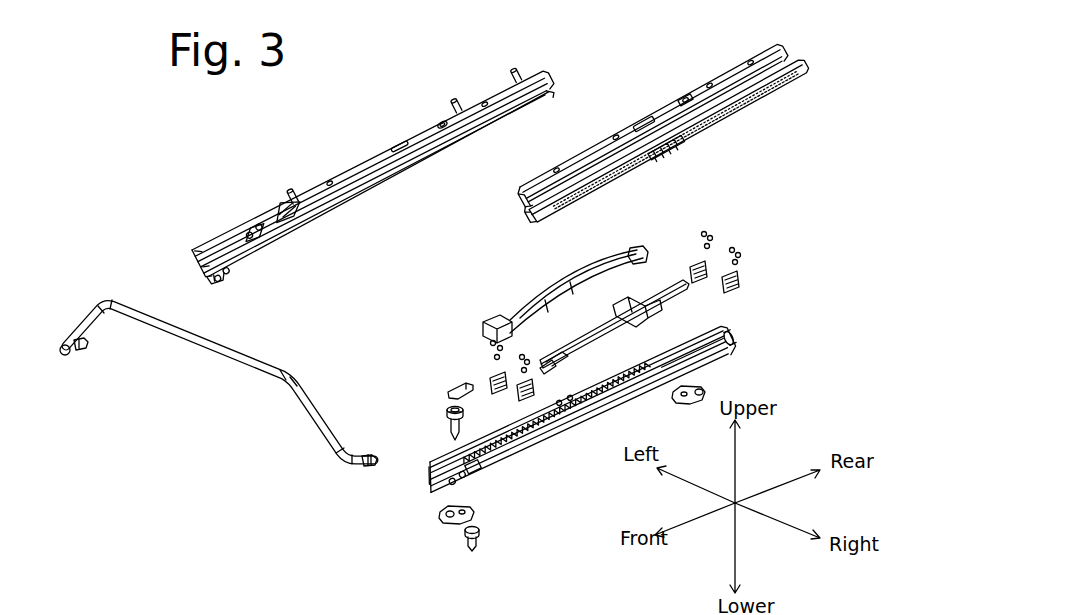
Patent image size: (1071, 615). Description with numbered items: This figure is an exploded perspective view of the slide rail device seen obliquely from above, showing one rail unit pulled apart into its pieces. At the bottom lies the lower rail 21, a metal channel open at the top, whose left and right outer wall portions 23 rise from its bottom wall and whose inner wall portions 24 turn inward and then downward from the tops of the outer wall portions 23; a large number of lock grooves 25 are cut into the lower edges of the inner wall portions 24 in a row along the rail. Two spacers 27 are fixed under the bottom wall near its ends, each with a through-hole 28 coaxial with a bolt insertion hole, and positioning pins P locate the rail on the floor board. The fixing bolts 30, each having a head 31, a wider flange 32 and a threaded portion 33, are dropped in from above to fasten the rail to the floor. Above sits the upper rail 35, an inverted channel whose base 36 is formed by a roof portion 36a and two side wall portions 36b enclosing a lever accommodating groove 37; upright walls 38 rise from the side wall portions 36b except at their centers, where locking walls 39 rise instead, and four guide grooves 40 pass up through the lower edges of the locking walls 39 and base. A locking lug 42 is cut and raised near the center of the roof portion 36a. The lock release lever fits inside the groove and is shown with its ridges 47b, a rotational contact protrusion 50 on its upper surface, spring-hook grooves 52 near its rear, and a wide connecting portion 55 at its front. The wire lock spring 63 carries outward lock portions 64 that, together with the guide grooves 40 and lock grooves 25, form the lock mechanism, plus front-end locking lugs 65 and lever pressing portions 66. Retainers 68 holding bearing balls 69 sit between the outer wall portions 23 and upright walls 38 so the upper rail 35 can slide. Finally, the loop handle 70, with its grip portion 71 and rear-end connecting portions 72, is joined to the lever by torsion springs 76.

The lower rail 21 is at (317, 225).
The outer wall portions 23 is at (232, 228).
The inner wall portions 24 is at (537, 423).
The lock grooves 25 is at (265, 222).
The spacers 27 is at (473, 512).
The through-holes 28 is at (453, 523).
The fixing bolts 30 is at (450, 410).
The head 31 is at (425, 396).
The flange 32 is at (447, 413).
The threaded portion 33 is at (450, 435).
The upper rail 35 is at (497, 93).
The base 36 is at (367, 163).
The roof portion 36a is at (663, 113).
The side wall portions 36b is at (727, 103).
The lever accommodating groove 37 is at (528, 210).
The upright walls 38 is at (760, 97).
The locking walls 39 is at (673, 143).
The guide grooves 40 is at (670, 146).
The locking lug 42 is at (440, 120).
The ridges 47b is at (553, 290).
The rotational contact protrusion 50 is at (583, 273).
The spring-hook grooves 52 is at (647, 267).
The connecting portion 55 is at (265, 213).
The lock spring 63 is at (670, 277).
The lock portions 64 is at (623, 307).
The front-end locking lugs 65 is at (543, 363).
The lever pressing portions 66 is at (563, 357).
The retainers 68 is at (490, 380).
The bearing balls 69 is at (490, 343).
The loop handle 70 is at (250, 367).
The grip portion 71 is at (213, 360).
The rear-end connecting portions 72 is at (87, 342).
The torsion springs 76 is at (447, 393).
The positioning pins P is at (480, 542).